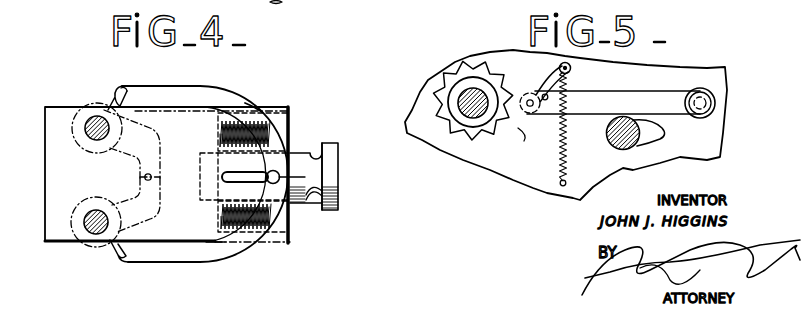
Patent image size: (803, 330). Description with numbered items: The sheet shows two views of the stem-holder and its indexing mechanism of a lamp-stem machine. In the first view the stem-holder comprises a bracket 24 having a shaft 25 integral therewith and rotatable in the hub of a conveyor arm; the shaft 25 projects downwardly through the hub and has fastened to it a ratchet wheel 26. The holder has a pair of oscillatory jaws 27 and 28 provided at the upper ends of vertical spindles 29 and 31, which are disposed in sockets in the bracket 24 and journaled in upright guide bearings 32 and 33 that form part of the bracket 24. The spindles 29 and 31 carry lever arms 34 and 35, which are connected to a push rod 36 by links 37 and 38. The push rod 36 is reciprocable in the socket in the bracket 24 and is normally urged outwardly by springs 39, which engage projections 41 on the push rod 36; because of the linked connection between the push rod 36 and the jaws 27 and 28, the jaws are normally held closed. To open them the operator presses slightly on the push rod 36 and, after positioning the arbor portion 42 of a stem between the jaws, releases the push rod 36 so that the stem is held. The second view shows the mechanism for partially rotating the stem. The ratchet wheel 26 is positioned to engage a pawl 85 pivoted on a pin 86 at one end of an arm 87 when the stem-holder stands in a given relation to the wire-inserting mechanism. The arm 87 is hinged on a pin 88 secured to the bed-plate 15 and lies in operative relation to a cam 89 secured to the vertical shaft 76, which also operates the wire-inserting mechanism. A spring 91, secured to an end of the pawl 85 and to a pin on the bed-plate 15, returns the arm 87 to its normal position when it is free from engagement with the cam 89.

In FIG. 4, the bracket 24 is at (270, 247).
In FIG. 4, the link 37 is at (229, 258).
In FIG. 4, the link 38 is at (253, 103).
In FIG. 4, the lever arm 35 is at (115, 95).
In FIG. 4, the lever arm 34 is at (114, 258).
In FIG. 4, the upright guide bearing 33 is at (80, 112).
In FIG. 4, the vertical spindle 31 is at (93, 117).
In FIG. 4, the upright guide bearing 32 is at (83, 243).
In FIG. 4, the vertical spindle 29 is at (96, 234).
In FIG. 4, the oscillatory jaw 28 is at (150, 127).
In FIG. 4, the oscillatory jaw 27 is at (158, 221).
In FIG. 4, the arbor portion 42 is at (143, 177).
In FIG. 4, the spring 39 is at (282, 119).
In FIG. 4, the push rod 36 is at (296, 207).
In FIG. 4, the projection 41 is at (290, 137).
In FIG. 5, the bed-plate 15 is at (723, 139).
In FIG. 5, the ratchet wheel 26 is at (477, 142).
In FIG. 5, the shaft 25 is at (458, 101).
In FIG. 5, the pin 86 is at (527, 97).
In FIG. 5, the pawl 85 is at (523, 134).
In FIG. 5, the arm 87 is at (613, 94).
In FIG. 5, the pin 88 is at (708, 101).
In FIG. 5, the spring 91 is at (568, 175).
In FIG. 5, the vertical shaft 76 is at (623, 150).
In FIG. 5, the cam 89 is at (664, 138).